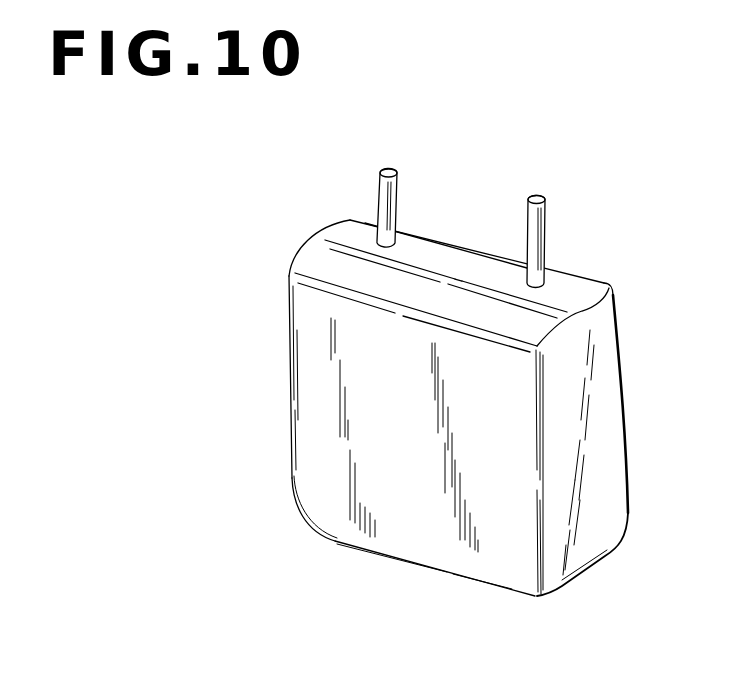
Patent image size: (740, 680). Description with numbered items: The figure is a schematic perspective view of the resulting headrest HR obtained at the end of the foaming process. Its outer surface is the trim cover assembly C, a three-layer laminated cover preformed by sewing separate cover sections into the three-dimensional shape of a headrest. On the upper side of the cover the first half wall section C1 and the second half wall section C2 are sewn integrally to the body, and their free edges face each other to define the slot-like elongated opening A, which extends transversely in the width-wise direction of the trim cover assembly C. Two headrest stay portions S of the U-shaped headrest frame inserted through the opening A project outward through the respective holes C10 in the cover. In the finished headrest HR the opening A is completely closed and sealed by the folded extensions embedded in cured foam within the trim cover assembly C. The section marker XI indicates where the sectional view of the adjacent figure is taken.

The trim cover assembly C is at (300, 373).
The first half wall section C1 is at (577, 287).
The second half wall section C2 is at (310, 257).
The holes C10 is at (630, 193).
The headrest stay portions S is at (377, 190).
The elongated opening A is at (457, 277).
The headrest HR is at (278, 490).
The section line XI is at (463, 211).